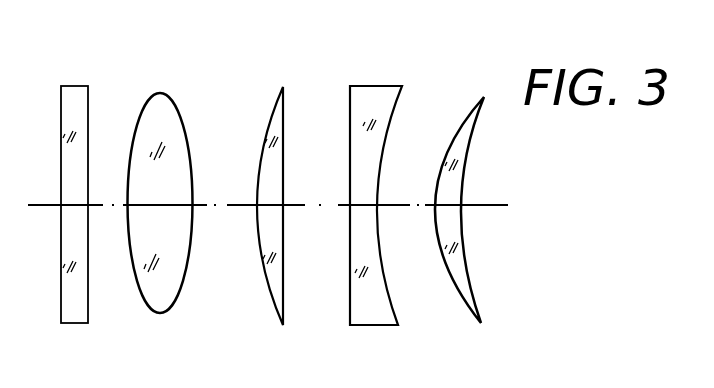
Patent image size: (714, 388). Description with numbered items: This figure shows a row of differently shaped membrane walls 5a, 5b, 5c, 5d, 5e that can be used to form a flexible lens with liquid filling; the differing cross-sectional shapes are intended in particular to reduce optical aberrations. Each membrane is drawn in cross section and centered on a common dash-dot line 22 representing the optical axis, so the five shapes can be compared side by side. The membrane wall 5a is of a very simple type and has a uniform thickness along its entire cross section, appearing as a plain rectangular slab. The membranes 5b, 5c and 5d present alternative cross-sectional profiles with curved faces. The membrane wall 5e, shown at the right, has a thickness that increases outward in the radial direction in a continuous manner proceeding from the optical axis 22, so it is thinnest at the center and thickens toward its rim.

The membrane wall 5a is at (80, 86).
The membrane 5b is at (163, 110).
The membrane 5c is at (279, 88).
The membrane 5d is at (383, 97).
The membrane wall 5e is at (484, 97).
The optical axis 22 is at (490, 205).